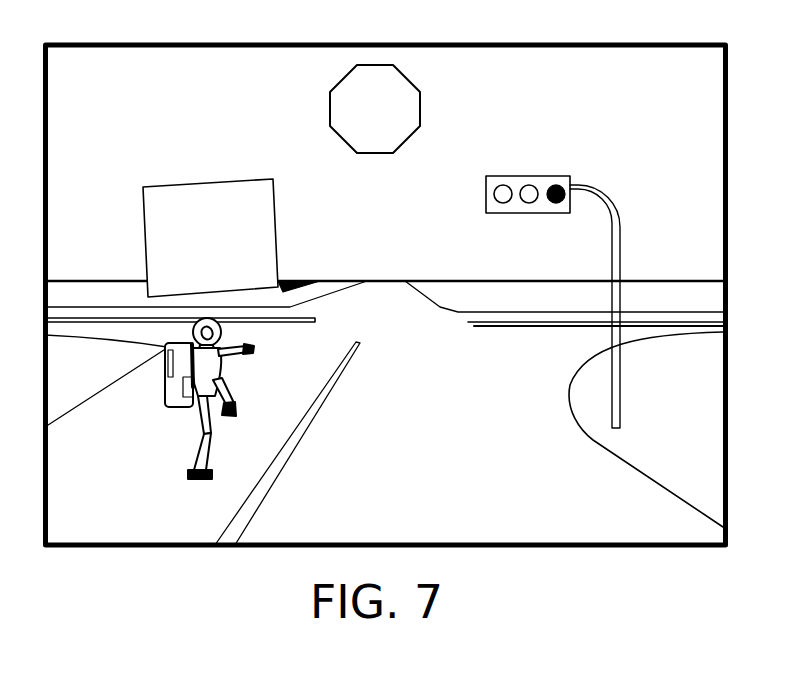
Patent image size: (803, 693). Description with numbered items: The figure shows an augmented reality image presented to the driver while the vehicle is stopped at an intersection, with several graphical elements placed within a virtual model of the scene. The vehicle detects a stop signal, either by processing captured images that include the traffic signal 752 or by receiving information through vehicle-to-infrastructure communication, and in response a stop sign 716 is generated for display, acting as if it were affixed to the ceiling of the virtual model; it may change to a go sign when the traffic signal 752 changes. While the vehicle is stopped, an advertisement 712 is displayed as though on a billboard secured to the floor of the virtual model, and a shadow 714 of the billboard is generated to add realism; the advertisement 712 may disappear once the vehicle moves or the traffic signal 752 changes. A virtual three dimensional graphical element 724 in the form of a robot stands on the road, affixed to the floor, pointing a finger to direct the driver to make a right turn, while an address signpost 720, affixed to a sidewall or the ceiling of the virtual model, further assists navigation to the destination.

The advertisement 712 is at (178, 186).
The shadow 714 is at (286, 281).
The stop sign 716 is at (413, 87).
The address signpost 720 is at (688, 124).
The virtual three dimensional graphical element 724 is at (167, 390).
The traffic signal 752 is at (523, 213).